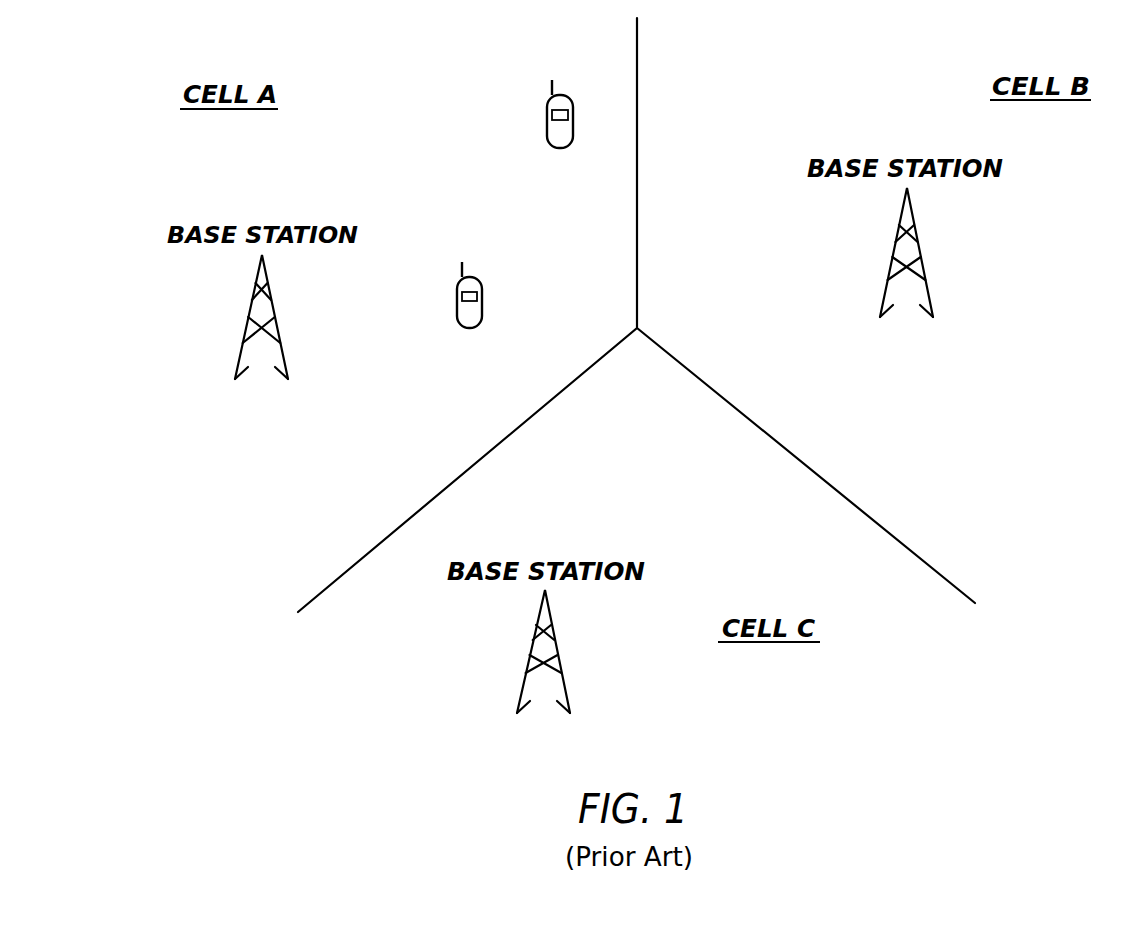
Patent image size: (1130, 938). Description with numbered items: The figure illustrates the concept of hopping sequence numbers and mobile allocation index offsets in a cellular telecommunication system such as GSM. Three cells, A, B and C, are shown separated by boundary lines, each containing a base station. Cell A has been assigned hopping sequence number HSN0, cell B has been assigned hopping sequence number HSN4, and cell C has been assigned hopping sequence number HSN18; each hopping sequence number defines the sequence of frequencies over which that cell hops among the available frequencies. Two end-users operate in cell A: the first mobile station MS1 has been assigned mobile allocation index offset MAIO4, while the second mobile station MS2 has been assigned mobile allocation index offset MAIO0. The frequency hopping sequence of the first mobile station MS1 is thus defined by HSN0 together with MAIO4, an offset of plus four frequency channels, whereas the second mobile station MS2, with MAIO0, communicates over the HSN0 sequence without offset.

The first mobile station MS1 is at (548, 110).
The second mobile station MS2 is at (482, 289).
The mobile allocation index offset 4 MAIO4 is at (555, 175).
The mobile allocation index offset 0 MAIO0 is at (461, 355).
The hopping sequence number 0 HSN0 is at (277, 339).
The hopping sequence number 4 HSN4 is at (923, 275).
The hopping sequence number 18 HSN18 is at (563, 674).